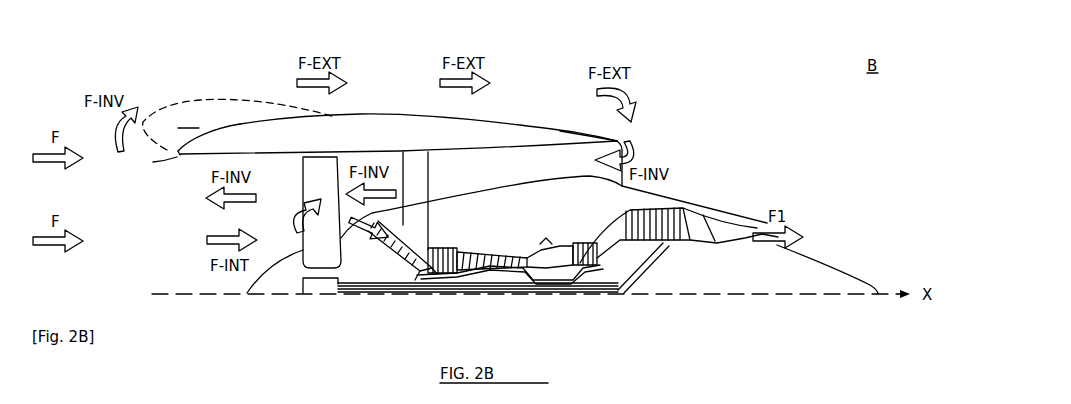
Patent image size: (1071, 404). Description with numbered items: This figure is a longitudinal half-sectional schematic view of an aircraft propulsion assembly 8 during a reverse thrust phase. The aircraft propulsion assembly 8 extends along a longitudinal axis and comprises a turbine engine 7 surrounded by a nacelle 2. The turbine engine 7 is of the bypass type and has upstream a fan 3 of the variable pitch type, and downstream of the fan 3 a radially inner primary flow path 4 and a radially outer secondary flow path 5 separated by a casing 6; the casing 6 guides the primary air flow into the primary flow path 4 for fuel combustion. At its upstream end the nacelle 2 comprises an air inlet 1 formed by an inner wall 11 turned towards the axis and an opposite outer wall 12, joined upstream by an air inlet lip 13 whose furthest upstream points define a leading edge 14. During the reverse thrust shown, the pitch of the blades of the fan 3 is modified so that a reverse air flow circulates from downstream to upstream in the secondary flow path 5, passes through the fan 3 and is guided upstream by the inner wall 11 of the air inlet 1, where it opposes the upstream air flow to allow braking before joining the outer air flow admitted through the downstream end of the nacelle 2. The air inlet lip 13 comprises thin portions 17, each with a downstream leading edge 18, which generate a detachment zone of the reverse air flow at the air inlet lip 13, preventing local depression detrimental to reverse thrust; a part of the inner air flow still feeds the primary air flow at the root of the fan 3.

The air inlet 1 is at (267, 50).
The nacelle 2 is at (622, 136).
The fan 3 is at (323, 302).
The primary flow path 4 is at (445, 280).
The secondary flow path 5 is at (481, 201).
The casing 6 is at (558, 276).
The turbine engine 7 is at (731, 186).
The aircraft propulsion assembly 8 is at (778, 96).
The inner wall 11 is at (214, 150).
The outer wall 12 is at (211, 128).
The air inlet lip 13 is at (184, 100).
The leading edge 14 is at (155, 168).
The thin portion 17 is at (174, 148).
The downstream leading edge 18 is at (155, 168).